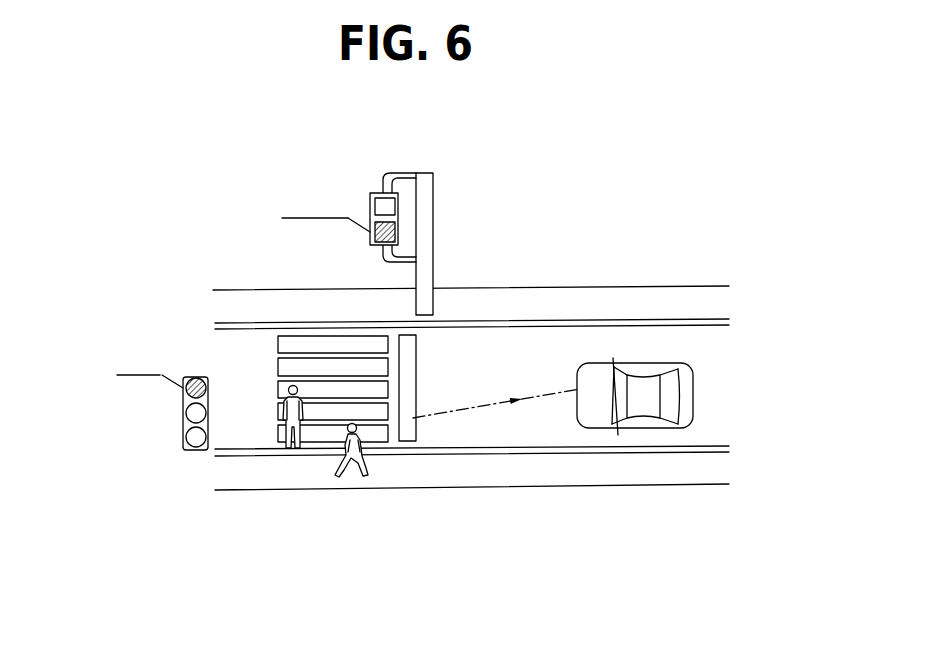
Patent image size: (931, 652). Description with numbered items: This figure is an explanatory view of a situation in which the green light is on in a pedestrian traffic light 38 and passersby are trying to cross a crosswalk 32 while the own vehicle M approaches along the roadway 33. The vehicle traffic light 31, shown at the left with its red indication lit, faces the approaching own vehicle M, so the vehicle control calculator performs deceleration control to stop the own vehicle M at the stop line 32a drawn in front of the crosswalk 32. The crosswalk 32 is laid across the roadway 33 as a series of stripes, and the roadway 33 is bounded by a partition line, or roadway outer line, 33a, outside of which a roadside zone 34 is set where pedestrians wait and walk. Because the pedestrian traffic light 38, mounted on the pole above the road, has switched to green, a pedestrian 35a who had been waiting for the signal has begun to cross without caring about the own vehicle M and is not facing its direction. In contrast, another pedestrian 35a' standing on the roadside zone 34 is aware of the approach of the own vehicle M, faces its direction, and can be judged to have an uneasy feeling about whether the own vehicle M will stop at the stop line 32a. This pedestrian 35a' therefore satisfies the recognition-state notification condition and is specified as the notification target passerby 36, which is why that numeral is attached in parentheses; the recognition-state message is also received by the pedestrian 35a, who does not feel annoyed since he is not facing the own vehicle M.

The vehicle traffic light 31 is at (183, 437).
The crosswalk 32 is at (278, 369).
The stop line 32a is at (416, 385).
The roadway 33 is at (510, 368).
The partition line (roadway outer line) 33a is at (710, 447).
The roadside zone 34 is at (642, 473).
The pedestrian 35a is at (298, 469).
The pedestrian 35a' is at (354, 503).
The notification target passerby 36 is at (350, 475).
The pedestrian traffic light 38 is at (433, 223).
The own vehicle M is at (693, 385).